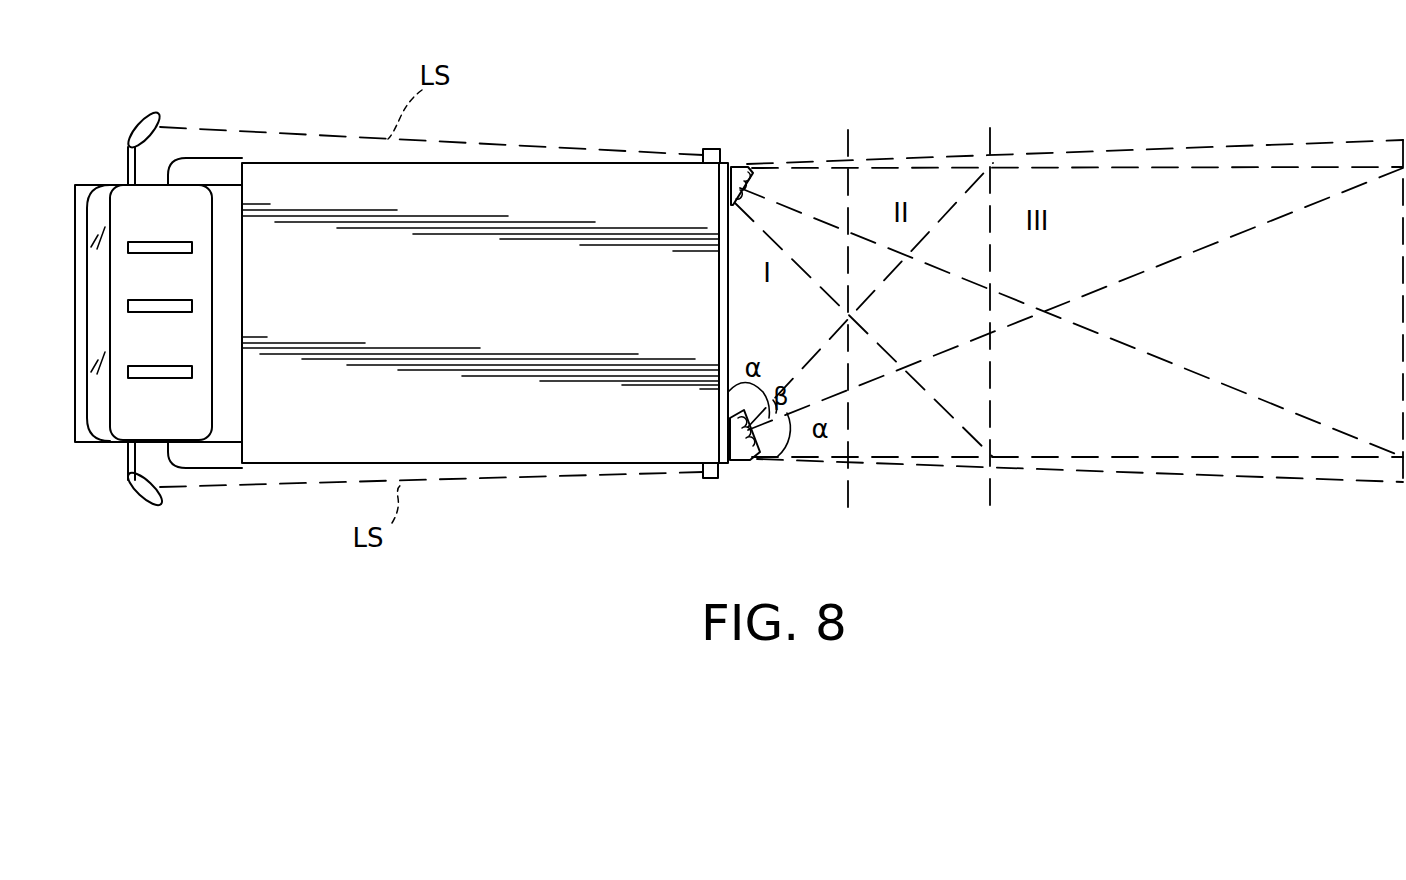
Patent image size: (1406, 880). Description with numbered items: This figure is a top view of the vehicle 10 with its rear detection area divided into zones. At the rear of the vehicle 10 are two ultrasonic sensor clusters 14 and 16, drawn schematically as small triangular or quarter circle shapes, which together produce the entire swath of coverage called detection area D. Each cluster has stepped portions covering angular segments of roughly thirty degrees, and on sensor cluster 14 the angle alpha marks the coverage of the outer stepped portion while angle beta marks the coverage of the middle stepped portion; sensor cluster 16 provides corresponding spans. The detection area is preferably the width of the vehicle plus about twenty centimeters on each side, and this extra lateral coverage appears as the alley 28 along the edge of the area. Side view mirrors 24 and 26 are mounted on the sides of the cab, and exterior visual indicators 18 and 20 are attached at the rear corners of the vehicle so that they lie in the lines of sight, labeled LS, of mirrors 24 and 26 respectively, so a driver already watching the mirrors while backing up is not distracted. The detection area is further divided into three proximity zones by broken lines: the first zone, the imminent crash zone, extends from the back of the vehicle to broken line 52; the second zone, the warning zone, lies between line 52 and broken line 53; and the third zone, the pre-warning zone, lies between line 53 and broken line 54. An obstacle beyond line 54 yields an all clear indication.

The vehicle 10 is at (517, 301).
The sensor cluster 14 is at (752, 459).
The sensor cluster 16 is at (750, 165).
The exterior visual indicator 18 is at (712, 478).
The exterior visual indicator 20 is at (712, 149).
The side view mirror 24 is at (156, 505).
The side view mirror 26 is at (144, 114).
The alley 28 is at (1293, 471).
The broken line 52 is at (848, 495).
The broken line 53 is at (990, 490).
The broken line 54 is at (1398, 487).